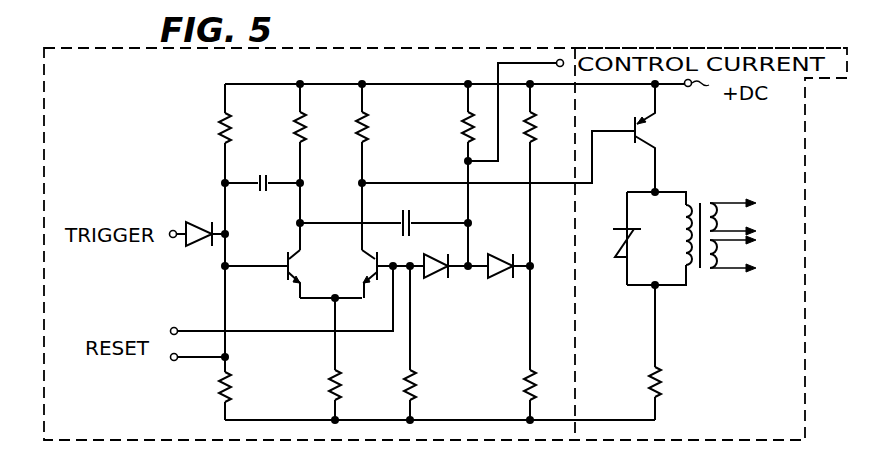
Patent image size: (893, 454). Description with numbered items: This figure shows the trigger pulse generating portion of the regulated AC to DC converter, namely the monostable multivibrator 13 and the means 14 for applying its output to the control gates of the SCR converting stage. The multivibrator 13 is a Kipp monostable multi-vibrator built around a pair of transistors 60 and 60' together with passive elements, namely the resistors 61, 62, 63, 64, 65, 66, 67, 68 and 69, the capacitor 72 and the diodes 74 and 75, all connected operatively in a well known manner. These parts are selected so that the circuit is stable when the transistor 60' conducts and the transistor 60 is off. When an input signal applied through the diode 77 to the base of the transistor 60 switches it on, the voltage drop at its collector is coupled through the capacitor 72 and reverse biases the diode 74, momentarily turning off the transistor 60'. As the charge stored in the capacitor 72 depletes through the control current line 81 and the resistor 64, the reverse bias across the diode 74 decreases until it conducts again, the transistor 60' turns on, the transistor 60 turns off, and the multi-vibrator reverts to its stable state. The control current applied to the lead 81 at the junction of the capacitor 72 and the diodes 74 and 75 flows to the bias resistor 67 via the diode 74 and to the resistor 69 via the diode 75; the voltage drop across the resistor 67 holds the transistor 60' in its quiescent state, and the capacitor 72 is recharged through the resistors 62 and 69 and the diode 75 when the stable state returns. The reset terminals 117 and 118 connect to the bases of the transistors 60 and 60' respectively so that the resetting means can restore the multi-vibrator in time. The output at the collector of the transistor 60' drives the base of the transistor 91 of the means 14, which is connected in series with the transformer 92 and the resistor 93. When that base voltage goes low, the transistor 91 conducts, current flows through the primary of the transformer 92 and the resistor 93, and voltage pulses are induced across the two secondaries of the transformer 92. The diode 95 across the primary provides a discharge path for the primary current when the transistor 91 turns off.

The monostable multivibrator 13 is at (438, 48).
The means for applying trigger pulses 14 is at (667, 45).
The transistor 60 is at (309, 265).
The transistor 60' is at (347, 274).
The resistor 61 is at (220, 130).
The resistor 62 is at (294, 128).
The resistor 63 is at (357, 128).
The resistor 64 is at (461, 122).
The resistor 65 is at (236, 382).
The resistor 66 is at (340, 385).
The bias resistor 67 is at (418, 385).
The resistor 68 is at (534, 119).
The resistor 69 is at (524, 378).
The capacitor 72 is at (411, 218).
The diode 74 is at (428, 255).
The diode 75 is at (496, 254).
The diode 77 is at (197, 218).
The control current line 81 is at (496, 63).
The transistor 91 is at (633, 140).
The transformer 92 is at (709, 284).
The resistor 93 is at (649, 378).
The diode 95 is at (616, 257).
The output terminal 117 is at (176, 362).
The output terminal 118 is at (175, 328).